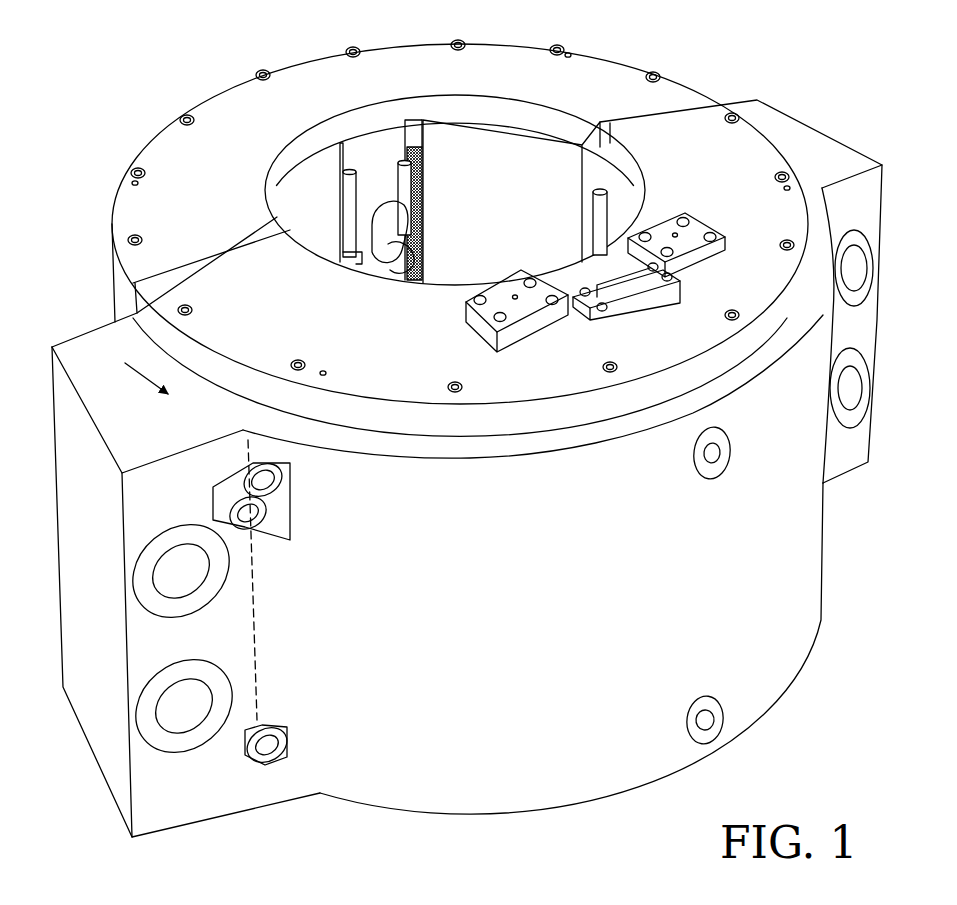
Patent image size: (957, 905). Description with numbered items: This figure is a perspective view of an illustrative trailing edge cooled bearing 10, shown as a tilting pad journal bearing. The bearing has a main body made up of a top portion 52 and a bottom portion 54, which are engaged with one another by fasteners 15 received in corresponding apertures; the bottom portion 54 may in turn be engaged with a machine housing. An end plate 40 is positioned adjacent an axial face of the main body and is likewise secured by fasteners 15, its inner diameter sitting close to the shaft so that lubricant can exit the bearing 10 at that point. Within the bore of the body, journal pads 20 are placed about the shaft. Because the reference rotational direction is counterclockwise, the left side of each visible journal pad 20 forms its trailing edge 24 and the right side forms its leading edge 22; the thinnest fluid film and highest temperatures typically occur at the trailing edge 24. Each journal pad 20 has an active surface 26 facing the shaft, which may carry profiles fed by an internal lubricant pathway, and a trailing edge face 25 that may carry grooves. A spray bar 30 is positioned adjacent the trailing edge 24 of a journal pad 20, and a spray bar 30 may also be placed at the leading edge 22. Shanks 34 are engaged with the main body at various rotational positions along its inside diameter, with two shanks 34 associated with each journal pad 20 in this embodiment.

The trailing edge cooled bearing 10 is at (884, 90).
The fasteners 15 is at (872, 265).
The journal pad 20 is at (522, 150).
The leading edge 22 is at (623, 165).
The trailing edge 24 is at (413, 130).
The trailing edge face 25 is at (404, 150).
The active surface 26 is at (486, 184).
The spray bar 30 is at (386, 178).
The shank 34 is at (387, 222).
The end plate 40 is at (720, 112).
The top portion 52 is at (118, 302).
The bottom portion 54 is at (790, 598).